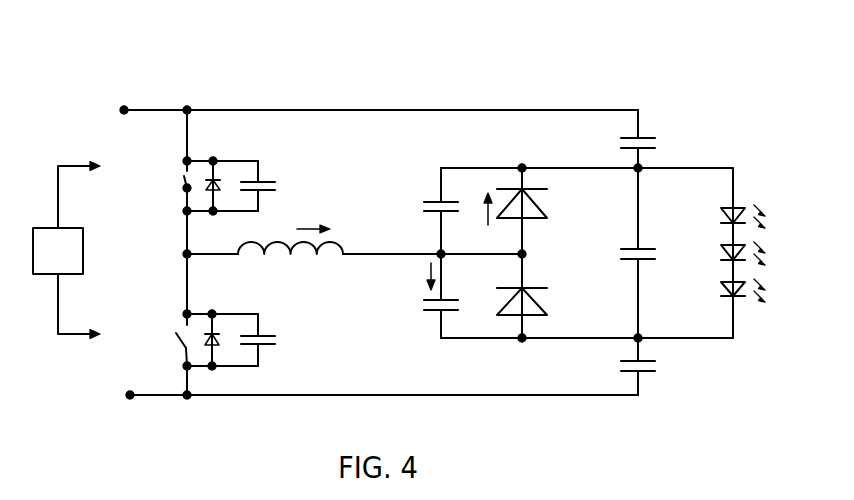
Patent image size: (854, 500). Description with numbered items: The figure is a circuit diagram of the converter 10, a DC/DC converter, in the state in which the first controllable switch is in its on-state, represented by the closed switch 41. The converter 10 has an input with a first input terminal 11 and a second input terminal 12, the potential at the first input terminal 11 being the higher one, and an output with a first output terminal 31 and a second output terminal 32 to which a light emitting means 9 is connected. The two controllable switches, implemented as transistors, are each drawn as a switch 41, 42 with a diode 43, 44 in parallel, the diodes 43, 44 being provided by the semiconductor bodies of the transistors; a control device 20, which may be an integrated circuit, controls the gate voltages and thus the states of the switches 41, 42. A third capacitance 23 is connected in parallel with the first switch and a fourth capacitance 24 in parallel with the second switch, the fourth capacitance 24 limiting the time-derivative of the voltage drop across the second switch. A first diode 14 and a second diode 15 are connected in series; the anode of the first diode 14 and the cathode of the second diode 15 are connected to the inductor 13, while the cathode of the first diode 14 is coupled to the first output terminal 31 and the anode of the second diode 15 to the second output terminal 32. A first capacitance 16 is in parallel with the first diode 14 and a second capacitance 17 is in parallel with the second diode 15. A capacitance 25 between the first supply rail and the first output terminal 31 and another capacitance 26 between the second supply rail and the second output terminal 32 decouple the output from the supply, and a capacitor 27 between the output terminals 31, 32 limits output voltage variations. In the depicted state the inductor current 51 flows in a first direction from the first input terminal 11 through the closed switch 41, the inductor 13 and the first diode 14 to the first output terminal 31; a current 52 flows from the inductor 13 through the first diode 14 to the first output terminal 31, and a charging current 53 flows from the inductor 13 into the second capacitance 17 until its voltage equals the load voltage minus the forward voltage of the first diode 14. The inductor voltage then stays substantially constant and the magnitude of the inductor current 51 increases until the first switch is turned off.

The light emitting means 9 is at (752, 183).
The converter 10 is at (66, 52).
The first input terminal 11 is at (122, 108).
The second input terminal 12 is at (128, 397).
The inductor 13 is at (334, 245).
The first diode 14 is at (546, 211).
The second diode 15 is at (545, 308).
The first capacitance 16 is at (426, 201).
The second capacitance 17 is at (428, 311).
The control device 20 is at (84, 228).
The third capacitance 23 is at (271, 182).
The fourth capacitance 24 is at (271, 337).
The capacitance 25 is at (650, 137).
The other capacitance 26 is at (650, 374).
The capacitor 27 is at (627, 248).
The first output terminal 31 is at (641, 172).
The second output terminal 32 is at (643, 336).
The switch 41 is at (166, 166).
The switch 42 is at (173, 313).
The diode 43 is at (219, 181).
The diode 44 is at (218, 335).
The inductor current 51 is at (317, 228).
The current 52 is at (488, 218).
The charging current 53 is at (428, 276).